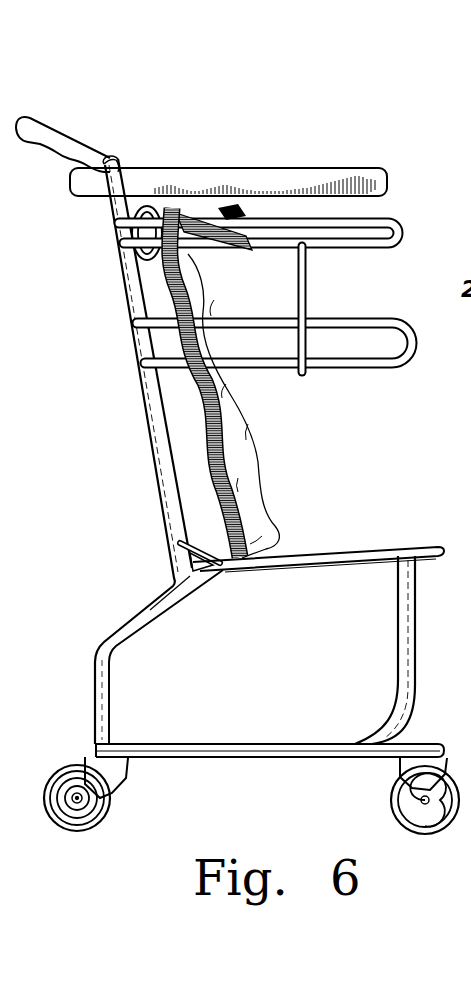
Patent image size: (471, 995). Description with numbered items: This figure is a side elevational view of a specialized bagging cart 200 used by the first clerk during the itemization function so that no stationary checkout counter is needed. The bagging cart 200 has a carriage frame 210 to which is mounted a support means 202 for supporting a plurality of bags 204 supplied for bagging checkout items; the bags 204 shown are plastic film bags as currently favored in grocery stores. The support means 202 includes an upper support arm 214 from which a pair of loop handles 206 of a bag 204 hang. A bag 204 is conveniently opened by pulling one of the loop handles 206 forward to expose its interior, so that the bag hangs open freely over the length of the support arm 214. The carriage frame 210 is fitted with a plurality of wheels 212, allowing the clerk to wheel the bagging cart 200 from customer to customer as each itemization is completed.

The bagging cart 200 is at (238, 142).
The support means 202 is at (290, 392).
The bags 204 is at (277, 527).
The loop handles 206 is at (208, 262).
The carriage frame 210 is at (146, 480).
The wheels 212 is at (100, 830).
The upper support arm 214 is at (407, 222).